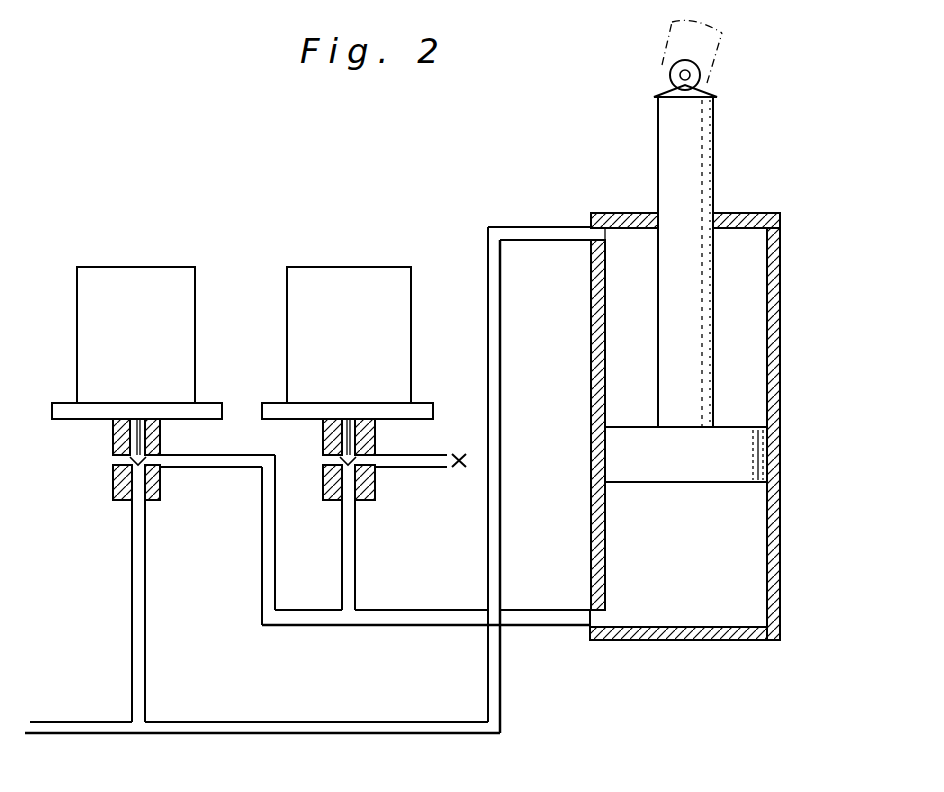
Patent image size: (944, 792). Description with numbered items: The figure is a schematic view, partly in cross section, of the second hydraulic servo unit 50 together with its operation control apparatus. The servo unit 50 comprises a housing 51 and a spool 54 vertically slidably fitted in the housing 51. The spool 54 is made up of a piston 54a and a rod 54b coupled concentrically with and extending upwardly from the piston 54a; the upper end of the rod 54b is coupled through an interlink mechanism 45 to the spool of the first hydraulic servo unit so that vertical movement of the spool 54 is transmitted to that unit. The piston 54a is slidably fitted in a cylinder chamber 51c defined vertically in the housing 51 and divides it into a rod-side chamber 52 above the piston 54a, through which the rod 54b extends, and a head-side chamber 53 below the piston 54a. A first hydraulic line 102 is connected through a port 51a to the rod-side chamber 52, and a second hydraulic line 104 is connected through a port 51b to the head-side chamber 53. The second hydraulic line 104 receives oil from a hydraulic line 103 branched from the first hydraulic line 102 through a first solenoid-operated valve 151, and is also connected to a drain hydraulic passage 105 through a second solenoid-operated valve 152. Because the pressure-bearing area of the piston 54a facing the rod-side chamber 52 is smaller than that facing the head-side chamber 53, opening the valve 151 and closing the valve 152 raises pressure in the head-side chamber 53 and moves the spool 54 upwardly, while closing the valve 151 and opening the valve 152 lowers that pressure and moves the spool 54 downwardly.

The interlink mechanism 45 is at (725, 49).
The second hydraulic servo unit 50 is at (615, 157).
The housing 51 is at (760, 213).
The port 51a is at (583, 228).
The port 51b is at (592, 617).
The cylinder chamber 51c is at (765, 312).
The rod-side chamber 52 is at (645, 342).
The head-side chamber 53 is at (695, 562).
The spool 54 is at (744, 283).
The piston 54a is at (730, 437).
The rod 54b is at (713, 343).
The first hydraulic line 102 is at (412, 734).
The hydraulic line 103 is at (146, 627).
The second hydraulic line 104 is at (402, 607).
The drain hydraulic passage 105 is at (430, 470).
The first solenoid-operated valve 151 is at (157, 349).
The second solenoid-operated valve 152 is at (369, 349).